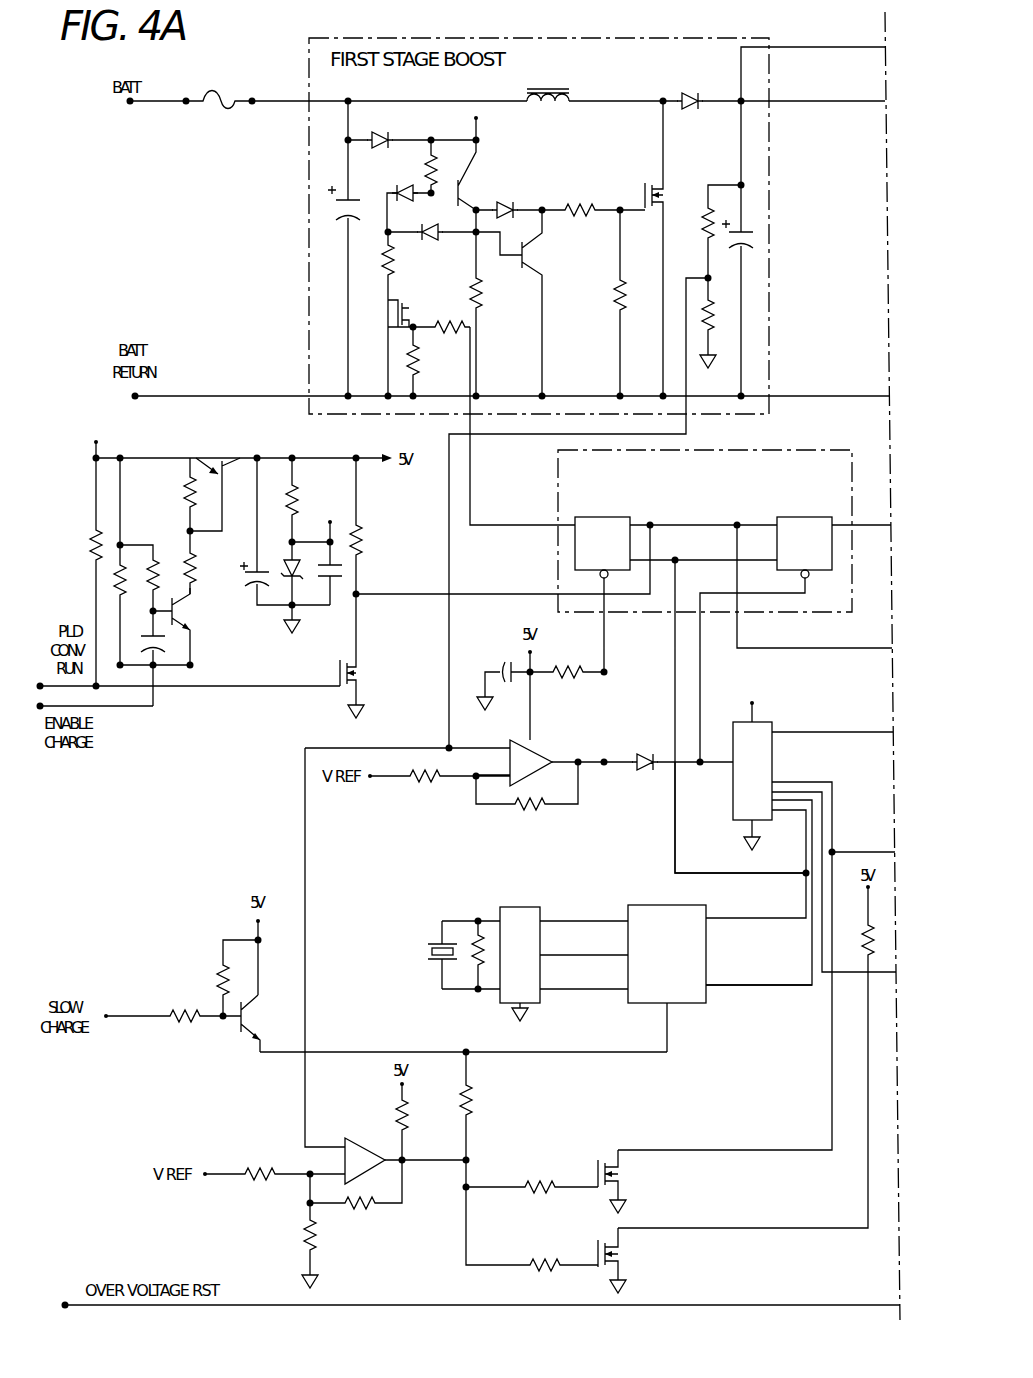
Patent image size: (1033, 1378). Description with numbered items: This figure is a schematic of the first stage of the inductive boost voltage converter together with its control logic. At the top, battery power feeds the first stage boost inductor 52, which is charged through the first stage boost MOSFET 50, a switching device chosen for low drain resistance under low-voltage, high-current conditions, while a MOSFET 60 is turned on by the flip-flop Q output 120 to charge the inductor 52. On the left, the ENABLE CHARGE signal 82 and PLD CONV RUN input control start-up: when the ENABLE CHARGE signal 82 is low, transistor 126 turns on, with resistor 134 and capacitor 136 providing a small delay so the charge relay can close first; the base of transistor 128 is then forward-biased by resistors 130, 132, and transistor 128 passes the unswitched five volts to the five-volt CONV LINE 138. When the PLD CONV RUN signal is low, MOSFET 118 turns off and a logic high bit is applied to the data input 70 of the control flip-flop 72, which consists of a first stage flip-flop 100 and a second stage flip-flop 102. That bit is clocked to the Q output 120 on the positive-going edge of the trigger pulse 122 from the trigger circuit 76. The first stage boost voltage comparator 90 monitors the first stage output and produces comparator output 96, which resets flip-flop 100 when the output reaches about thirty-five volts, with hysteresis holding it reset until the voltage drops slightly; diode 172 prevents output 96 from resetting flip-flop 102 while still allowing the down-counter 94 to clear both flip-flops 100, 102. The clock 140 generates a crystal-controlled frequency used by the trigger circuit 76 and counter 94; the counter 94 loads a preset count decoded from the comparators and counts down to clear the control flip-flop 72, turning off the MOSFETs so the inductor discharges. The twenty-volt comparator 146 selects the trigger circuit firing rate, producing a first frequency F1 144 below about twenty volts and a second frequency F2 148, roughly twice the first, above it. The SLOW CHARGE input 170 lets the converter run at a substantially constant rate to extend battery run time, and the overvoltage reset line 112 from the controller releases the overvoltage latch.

The first stage boost inductor 52 is at (555, 105).
The first stage boost MOSFET 50 is at (644, 186).
The MOSFET 60 is at (399, 319).
The Q output 120 is at (471, 468).
The resistor 130 is at (188, 468).
The transistor 128 is at (227, 468).
The five-volt CONV LINE 138 is at (311, 457).
The resistor 134 is at (96, 588).
The resistor 132 is at (187, 550).
The transistor 126 is at (190, 606).
The capacitor 136 is at (160, 652).
The MOSFET 118 is at (336, 670).
The ENABLE CHARGE signal 82 is at (116, 711).
The control flip-flop 72 is at (798, 448).
The first stage flip-flop 100 is at (611, 515).
The data input 70 is at (685, 522).
The second stage flip-flop 102 is at (789, 516).
The first stage boost voltage comparator 90 is at (540, 748).
The diode 172 is at (645, 753).
The comparator output 96 is at (592, 765).
The down-counter 94 is at (733, 801).
The trigger pulse 122 is at (676, 850).
The clock 140 is at (521, 906).
The first frequency F1 144 is at (748, 918).
The second frequency F2 148 is at (746, 987).
The trigger circuit 76 is at (648, 1005).
The SLOW CHARGE input 170 is at (139, 1015).
The 20-volt comparator 146 is at (368, 1140).
The overvoltage reset line 112 is at (352, 1305).